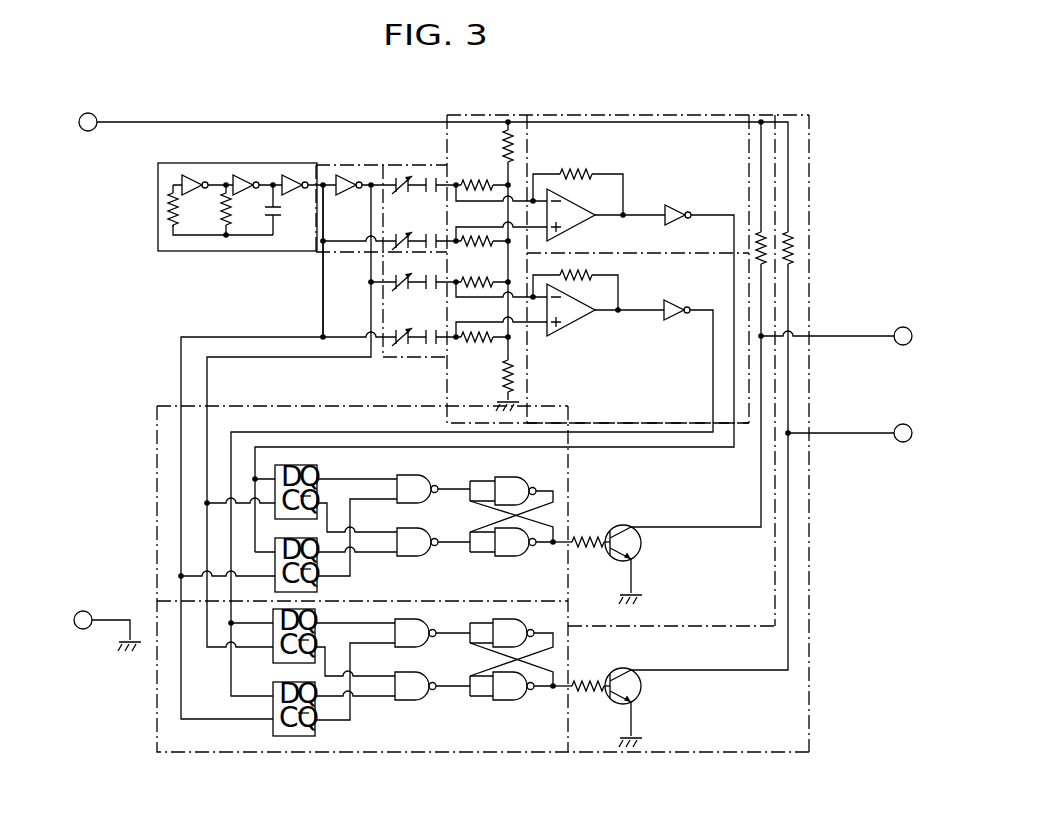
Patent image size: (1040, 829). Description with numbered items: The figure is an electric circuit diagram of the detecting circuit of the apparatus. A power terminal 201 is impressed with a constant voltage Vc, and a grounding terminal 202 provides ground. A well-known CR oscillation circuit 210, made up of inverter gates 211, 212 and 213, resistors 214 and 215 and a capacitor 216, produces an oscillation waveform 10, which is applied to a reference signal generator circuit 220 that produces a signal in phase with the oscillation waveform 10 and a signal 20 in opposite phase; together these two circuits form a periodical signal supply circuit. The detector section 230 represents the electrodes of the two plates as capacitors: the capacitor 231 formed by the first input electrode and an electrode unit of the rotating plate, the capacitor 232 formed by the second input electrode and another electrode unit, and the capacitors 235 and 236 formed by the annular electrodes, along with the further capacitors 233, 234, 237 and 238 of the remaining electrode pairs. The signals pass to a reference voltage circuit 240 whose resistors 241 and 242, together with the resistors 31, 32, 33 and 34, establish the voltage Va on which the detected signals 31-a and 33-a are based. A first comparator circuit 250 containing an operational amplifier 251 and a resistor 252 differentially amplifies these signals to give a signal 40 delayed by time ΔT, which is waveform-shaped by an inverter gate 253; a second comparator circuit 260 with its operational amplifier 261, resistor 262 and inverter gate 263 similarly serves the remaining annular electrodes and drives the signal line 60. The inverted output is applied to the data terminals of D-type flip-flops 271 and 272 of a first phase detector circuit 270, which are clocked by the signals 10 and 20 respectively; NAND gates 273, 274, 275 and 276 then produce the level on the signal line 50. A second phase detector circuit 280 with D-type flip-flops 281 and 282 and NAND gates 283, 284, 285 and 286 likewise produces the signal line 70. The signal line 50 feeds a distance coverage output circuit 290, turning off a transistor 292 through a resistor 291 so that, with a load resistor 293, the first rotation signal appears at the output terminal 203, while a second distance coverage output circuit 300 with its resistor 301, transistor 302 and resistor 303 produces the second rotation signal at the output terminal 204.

The oscillation waveform 10 is at (323, 178).
The opposite-phase signal 20 is at (371, 180).
The signal 31-a 31 is at (476, 172).
The resistor 32 is at (460, 232).
The signal 33-a 33 is at (458, 292).
The resistor 34 is at (457, 342).
The signal 40-a 40 is at (624, 220).
The signal line 50 is at (553, 546).
The signal line 60 is at (619, 316).
The signal line 70 is at (553, 690).
The power terminal 201 is at (80, 114).
The grounding terminal 202 is at (76, 618).
The output terminal 203 is at (912, 343).
The output terminal 204 is at (912, 440).
The CR oscillation circuit 210 is at (157, 228).
The inverter gate 211 is at (180, 180).
The inverter gate 212 is at (240, 178).
The inverter gate 213 is at (290, 178).
The resistor 214 is at (170, 200).
The resistor 215 is at (222, 220).
The capacitor 216 is at (268, 220).
The reference signal generator circuit 220 is at (352, 150).
The detector section 230 is at (428, 164).
The capacitor 231 is at (393, 190).
The capacitor 232 is at (395, 250).
The variable capacitor 233 is at (395, 290).
The variable capacitor 234 is at (398, 352).
The capacitor 235 is at (433, 197).
The capacitor 236 is at (440, 250).
The capacitor 237 is at (433, 293).
The capacitor 238 is at (430, 347).
The reference voltage circuit 240 is at (500, 114).
The resistor 241 is at (500, 170).
The resistor 242 is at (504, 378).
The first comparator circuit 250 is at (640, 114).
The operational amplifier 251 is at (570, 232).
The resistor 252 is at (577, 173).
The inverter 253 is at (676, 206).
The second comparator circuit 260 is at (752, 324).
The operational amplifier 261 is at (573, 322).
The feedback resistor 262 is at (598, 275).
The inverter 263 is at (668, 308).
The first phase detector circuit 270 is at (157, 488).
The D-type flip-flop 271 is at (319, 473).
The D-type flip-flop 272 is at (319, 587).
The NAND gate 273 is at (418, 476).
The NAND gate 274 is at (410, 558).
The NAND gate 275 is at (510, 478).
The NAND gate 276 is at (515, 558).
The second phase detector circuit 280 is at (156, 708).
The D flip-flop 281 is at (278, 670).
The D flip-flop 282 is at (278, 736).
The NAND gate 283 is at (415, 620).
The NAND gate 284 is at (404, 700).
The NAND gate 285 is at (512, 620).
The NAND gate 286 is at (513, 700).
The distance coverage output circuit 290 is at (705, 630).
The resistor 291 is at (588, 540).
The transistor 292 is at (620, 526).
The load resistor 293 is at (768, 240).
The distance coverage output circuit 300 is at (812, 676).
The base resistor 301 is at (588, 682).
The transistor 302 is at (620, 670).
The load resistor 303 is at (792, 252).